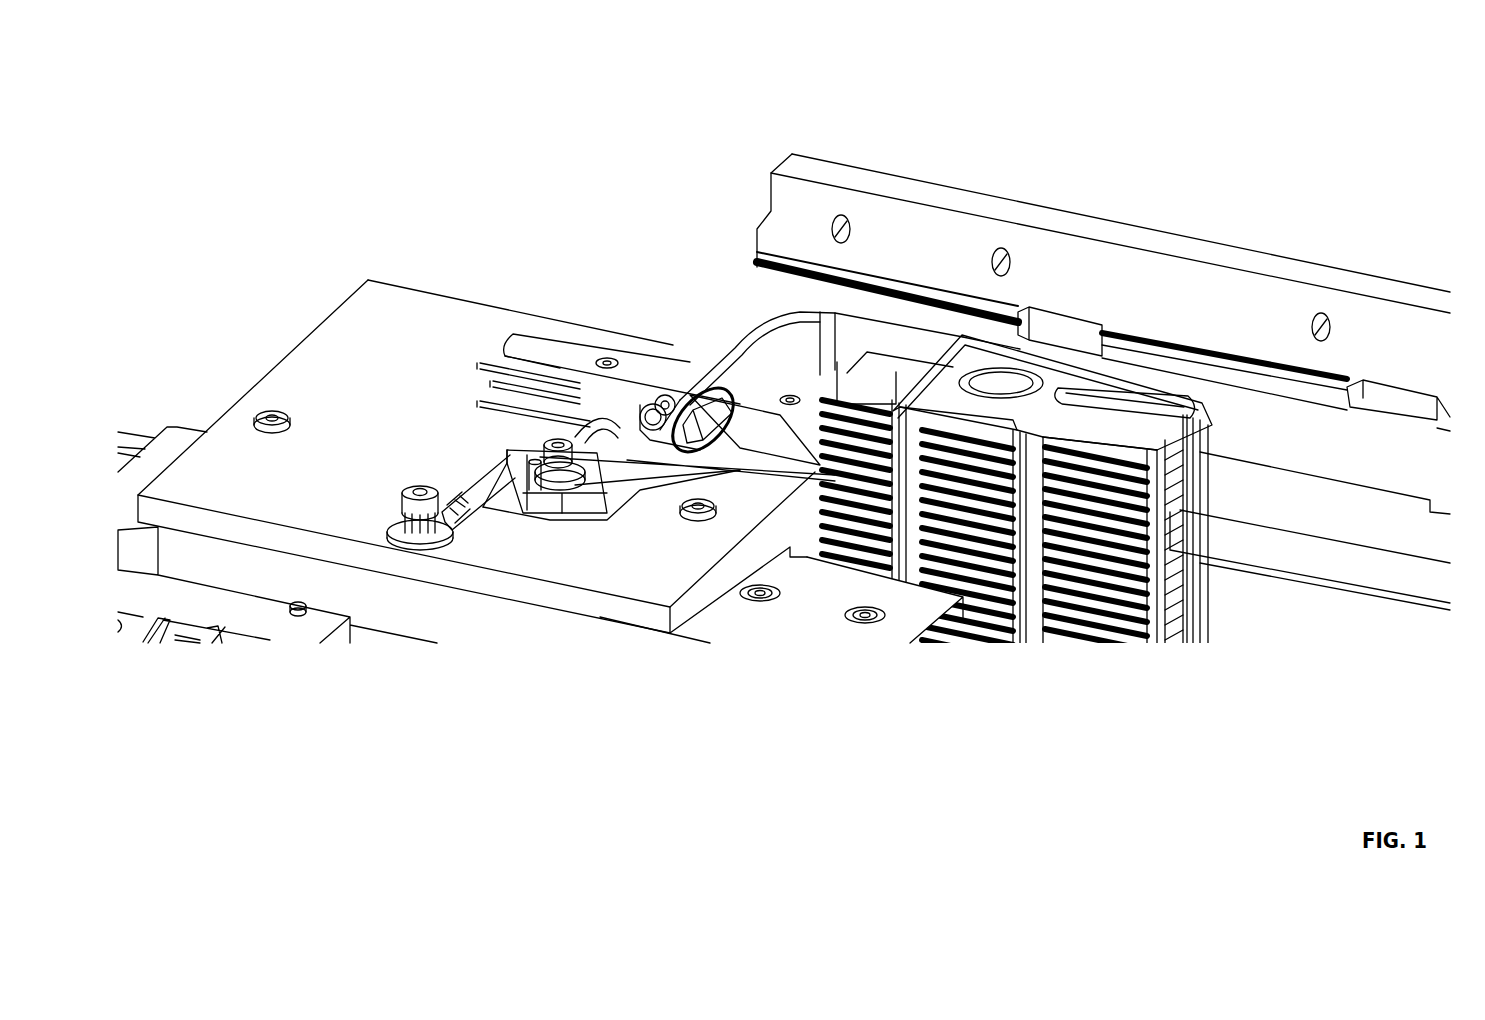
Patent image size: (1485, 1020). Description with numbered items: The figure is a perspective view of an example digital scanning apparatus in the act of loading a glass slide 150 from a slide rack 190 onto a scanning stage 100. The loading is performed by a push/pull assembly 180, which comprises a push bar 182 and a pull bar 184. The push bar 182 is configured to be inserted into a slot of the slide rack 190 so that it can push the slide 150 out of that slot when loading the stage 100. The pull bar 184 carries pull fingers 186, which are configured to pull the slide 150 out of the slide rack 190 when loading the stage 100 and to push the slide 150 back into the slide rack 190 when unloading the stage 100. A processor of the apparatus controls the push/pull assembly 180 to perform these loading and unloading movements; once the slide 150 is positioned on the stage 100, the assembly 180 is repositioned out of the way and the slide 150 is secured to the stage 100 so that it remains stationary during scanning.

The scanning stage 100 is at (348, 345).
The slide 150 is at (765, 450).
The push/pull assembly 180 is at (1038, 255).
The push bar 182 is at (1262, 540).
The pull bar 184 is at (748, 305).
The pull fingers 186 is at (703, 388).
The slide rack 190 is at (1032, 613).